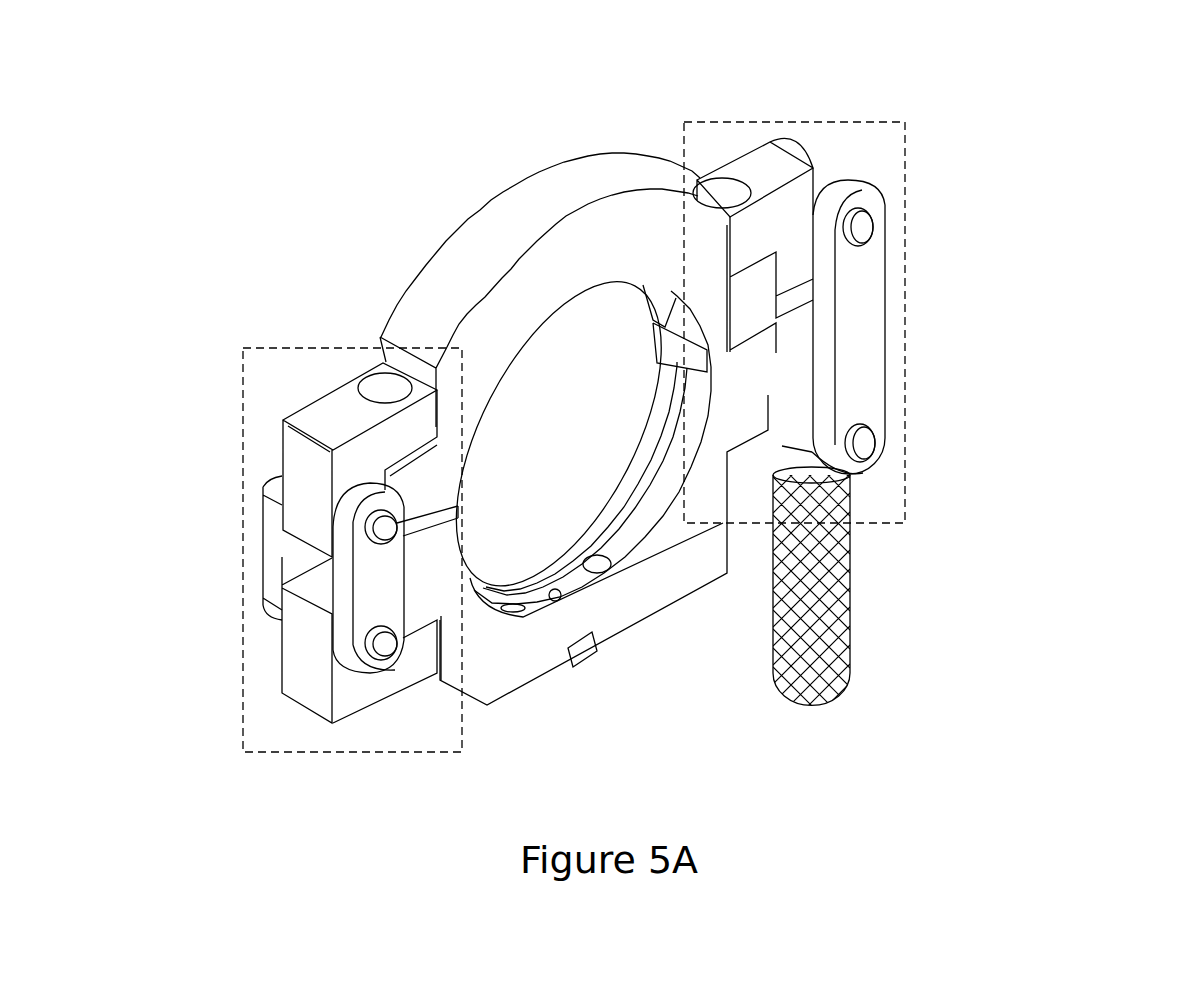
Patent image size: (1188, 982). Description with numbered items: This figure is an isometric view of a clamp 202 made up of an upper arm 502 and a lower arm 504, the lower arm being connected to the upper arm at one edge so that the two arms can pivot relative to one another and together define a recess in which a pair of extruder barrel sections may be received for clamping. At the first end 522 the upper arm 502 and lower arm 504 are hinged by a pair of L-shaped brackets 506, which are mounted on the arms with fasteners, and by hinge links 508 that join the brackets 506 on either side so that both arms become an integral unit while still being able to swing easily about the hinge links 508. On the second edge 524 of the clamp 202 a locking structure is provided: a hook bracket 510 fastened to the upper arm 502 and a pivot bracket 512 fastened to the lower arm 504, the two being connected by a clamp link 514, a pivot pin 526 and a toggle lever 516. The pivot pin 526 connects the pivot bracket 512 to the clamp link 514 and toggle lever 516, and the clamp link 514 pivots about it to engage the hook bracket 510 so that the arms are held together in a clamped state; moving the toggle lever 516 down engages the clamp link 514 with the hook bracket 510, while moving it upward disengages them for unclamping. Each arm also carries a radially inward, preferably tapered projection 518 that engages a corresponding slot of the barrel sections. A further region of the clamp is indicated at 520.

The clamp 202 is at (1064, 117).
The upper arm 502 is at (473, 236).
The lower arm 504 is at (625, 630).
The brackets 506 is at (297, 663).
The hinge links 508 is at (373, 573).
The hook bracket 510 is at (752, 158).
The pivot bracket 512 is at (863, 473).
The clamp link 514 is at (867, 348).
The toggle lever 516 is at (832, 638).
The projection 518 is at (613, 470).
The inner bore surface 520 is at (650, 433).
The first end 522 is at (242, 373).
The second edge 524 is at (905, 247).
The pivot pin 526 is at (883, 435).